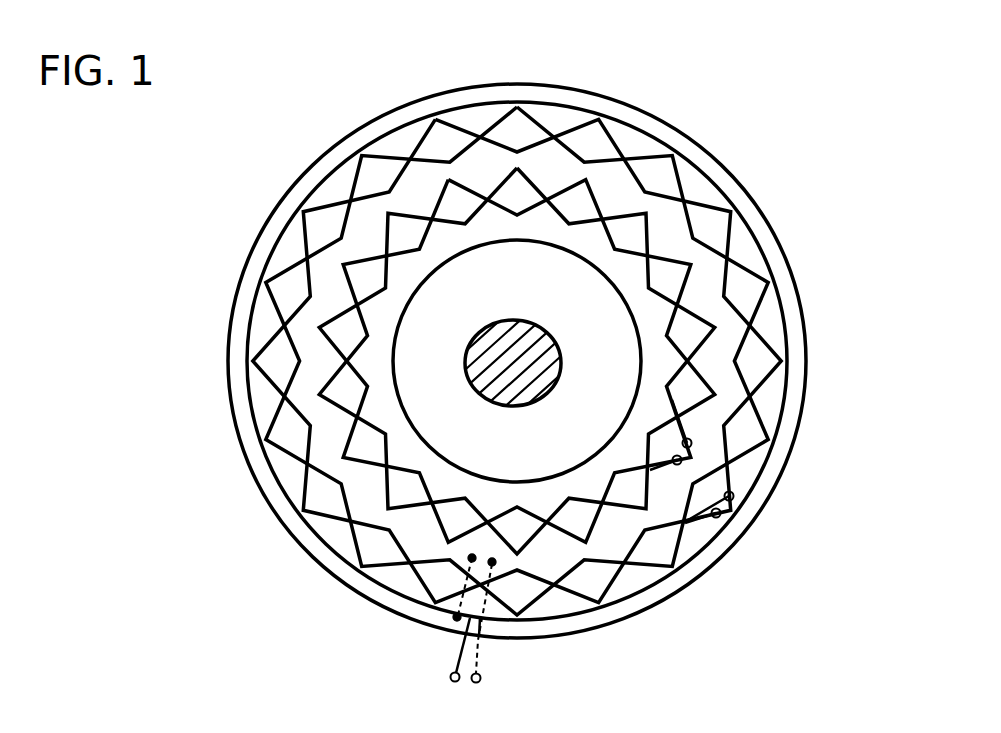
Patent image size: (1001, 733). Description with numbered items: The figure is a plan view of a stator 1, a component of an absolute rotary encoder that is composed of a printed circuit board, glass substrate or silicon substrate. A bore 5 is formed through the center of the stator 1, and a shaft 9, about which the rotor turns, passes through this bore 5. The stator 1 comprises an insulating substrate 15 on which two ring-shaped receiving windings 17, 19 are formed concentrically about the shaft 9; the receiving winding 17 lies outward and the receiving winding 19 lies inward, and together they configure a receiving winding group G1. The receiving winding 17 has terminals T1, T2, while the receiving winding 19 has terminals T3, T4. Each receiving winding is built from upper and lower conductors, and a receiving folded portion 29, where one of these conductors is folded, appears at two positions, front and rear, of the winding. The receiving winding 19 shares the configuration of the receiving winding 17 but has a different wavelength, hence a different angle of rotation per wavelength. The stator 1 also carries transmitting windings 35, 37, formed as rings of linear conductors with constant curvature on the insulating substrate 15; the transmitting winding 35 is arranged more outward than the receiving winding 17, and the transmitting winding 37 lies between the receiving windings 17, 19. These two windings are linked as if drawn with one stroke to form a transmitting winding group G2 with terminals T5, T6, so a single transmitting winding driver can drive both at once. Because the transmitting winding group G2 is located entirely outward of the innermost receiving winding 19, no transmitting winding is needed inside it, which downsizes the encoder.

The stator 1 is at (930, 102).
The bore 5 is at (412, 288).
The shaft 9 is at (512, 407).
The insulating substrate 15 is at (806, 355).
The receiving winding 17 is at (682, 175).
The receiving winding 19 is at (673, 253).
The receiving folded portion 29 is at (675, 461).
The transmitting winding 35 is at (577, 103).
The transmitting winding 37 is at (613, 180).
The receiving winding group G1 is at (830, 117).
The transmitting winding group G2 is at (720, 50).
The terminal T1 is at (720, 516).
The terminal T2 is at (733, 499).
The terminal T3 is at (682, 460).
The terminal T4 is at (692, 443).
The terminal T5 is at (452, 681).
The terminal T6 is at (478, 682).